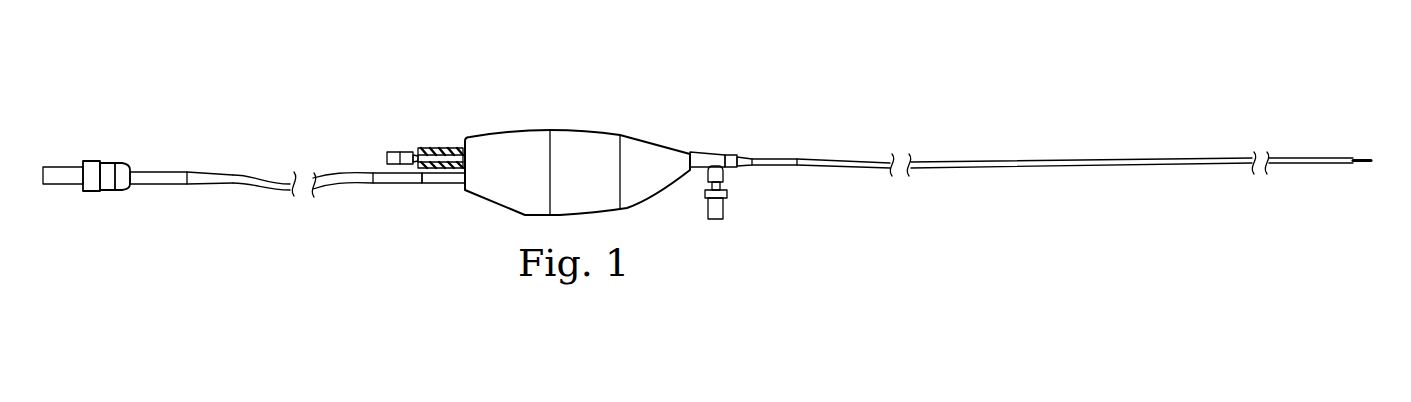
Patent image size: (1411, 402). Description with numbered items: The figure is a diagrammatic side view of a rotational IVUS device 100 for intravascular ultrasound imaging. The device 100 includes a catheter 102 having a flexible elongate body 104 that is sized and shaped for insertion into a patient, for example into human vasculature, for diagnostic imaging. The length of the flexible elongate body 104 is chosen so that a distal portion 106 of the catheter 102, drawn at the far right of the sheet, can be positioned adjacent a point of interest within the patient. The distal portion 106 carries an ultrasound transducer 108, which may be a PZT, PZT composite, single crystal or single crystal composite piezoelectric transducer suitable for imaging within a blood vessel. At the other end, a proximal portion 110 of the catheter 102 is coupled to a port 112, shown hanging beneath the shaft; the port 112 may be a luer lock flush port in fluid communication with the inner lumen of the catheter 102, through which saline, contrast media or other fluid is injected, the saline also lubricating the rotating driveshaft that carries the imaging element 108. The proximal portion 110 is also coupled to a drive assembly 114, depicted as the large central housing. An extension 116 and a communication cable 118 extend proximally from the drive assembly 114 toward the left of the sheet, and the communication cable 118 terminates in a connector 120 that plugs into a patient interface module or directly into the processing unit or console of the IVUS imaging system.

The rotational IVUS device 100 is at (484, 79).
The catheter 102 is at (1122, 150).
The flexible elongate body 104 is at (987, 162).
The distal portion 106 is at (1298, 158).
The ultrasound transducer 108 is at (1363, 159).
The proximal portion 110 is at (832, 158).
The port 112 is at (724, 206).
The drive assembly 114 is at (594, 124).
The extension 116 is at (390, 152).
The communication cable 118 is at (343, 189).
The connector 120 is at (93, 161).